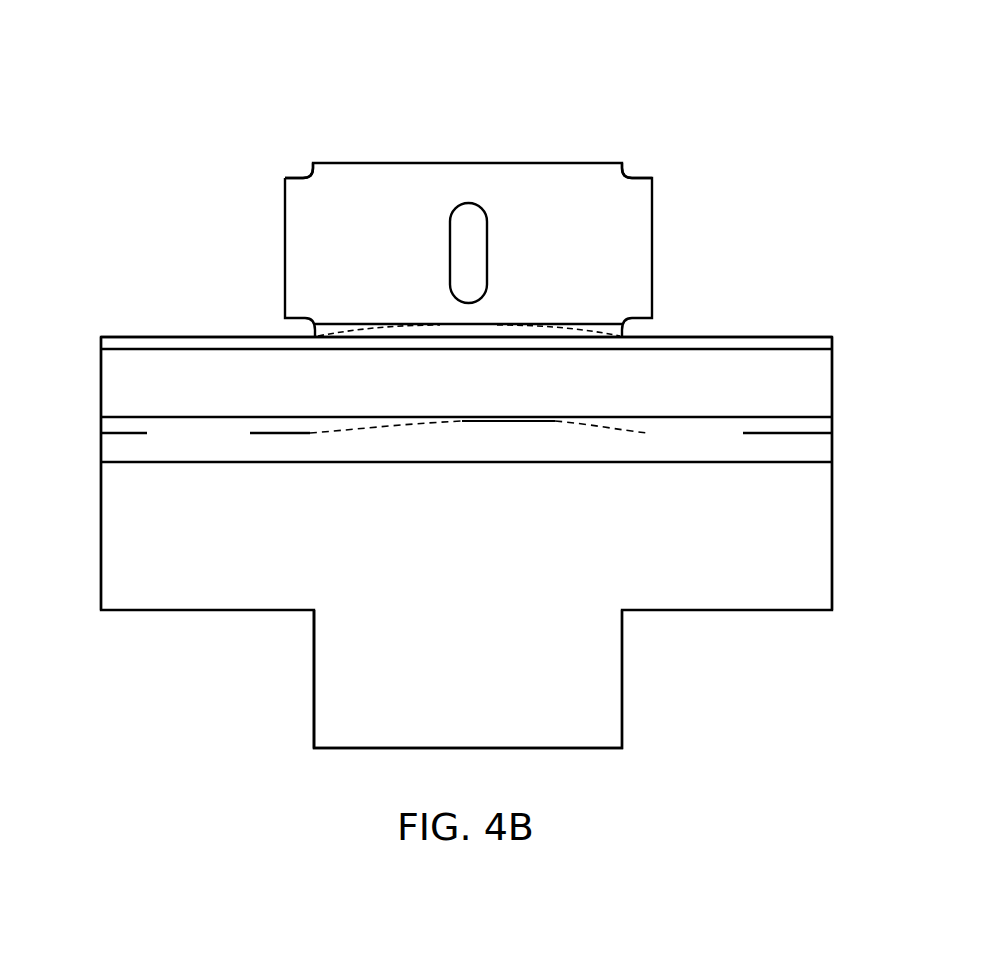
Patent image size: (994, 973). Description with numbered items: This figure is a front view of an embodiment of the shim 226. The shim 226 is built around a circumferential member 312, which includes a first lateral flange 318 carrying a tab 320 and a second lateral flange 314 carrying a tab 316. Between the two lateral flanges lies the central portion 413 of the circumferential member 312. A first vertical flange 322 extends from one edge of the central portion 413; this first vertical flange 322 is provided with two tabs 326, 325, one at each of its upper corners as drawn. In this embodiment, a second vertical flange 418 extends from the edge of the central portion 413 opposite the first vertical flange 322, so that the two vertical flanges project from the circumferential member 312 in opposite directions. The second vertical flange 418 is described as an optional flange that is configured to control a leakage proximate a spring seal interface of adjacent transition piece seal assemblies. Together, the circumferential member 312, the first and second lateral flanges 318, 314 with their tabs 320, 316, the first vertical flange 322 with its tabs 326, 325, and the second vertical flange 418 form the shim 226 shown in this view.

The shim 226 is at (282, 77).
The first vertical flange 322 is at (573, 180).
The tab 325 is at (283, 233).
The tab 326 is at (653, 237).
The tab 316 is at (186, 337).
The tab 320 is at (730, 337).
The central portion 413 is at (488, 514).
The second lateral flange 314 is at (118, 518).
The first lateral flange 318 is at (789, 524).
The circumferential member 312 is at (597, 584).
The second vertical flange 418 is at (347, 675).